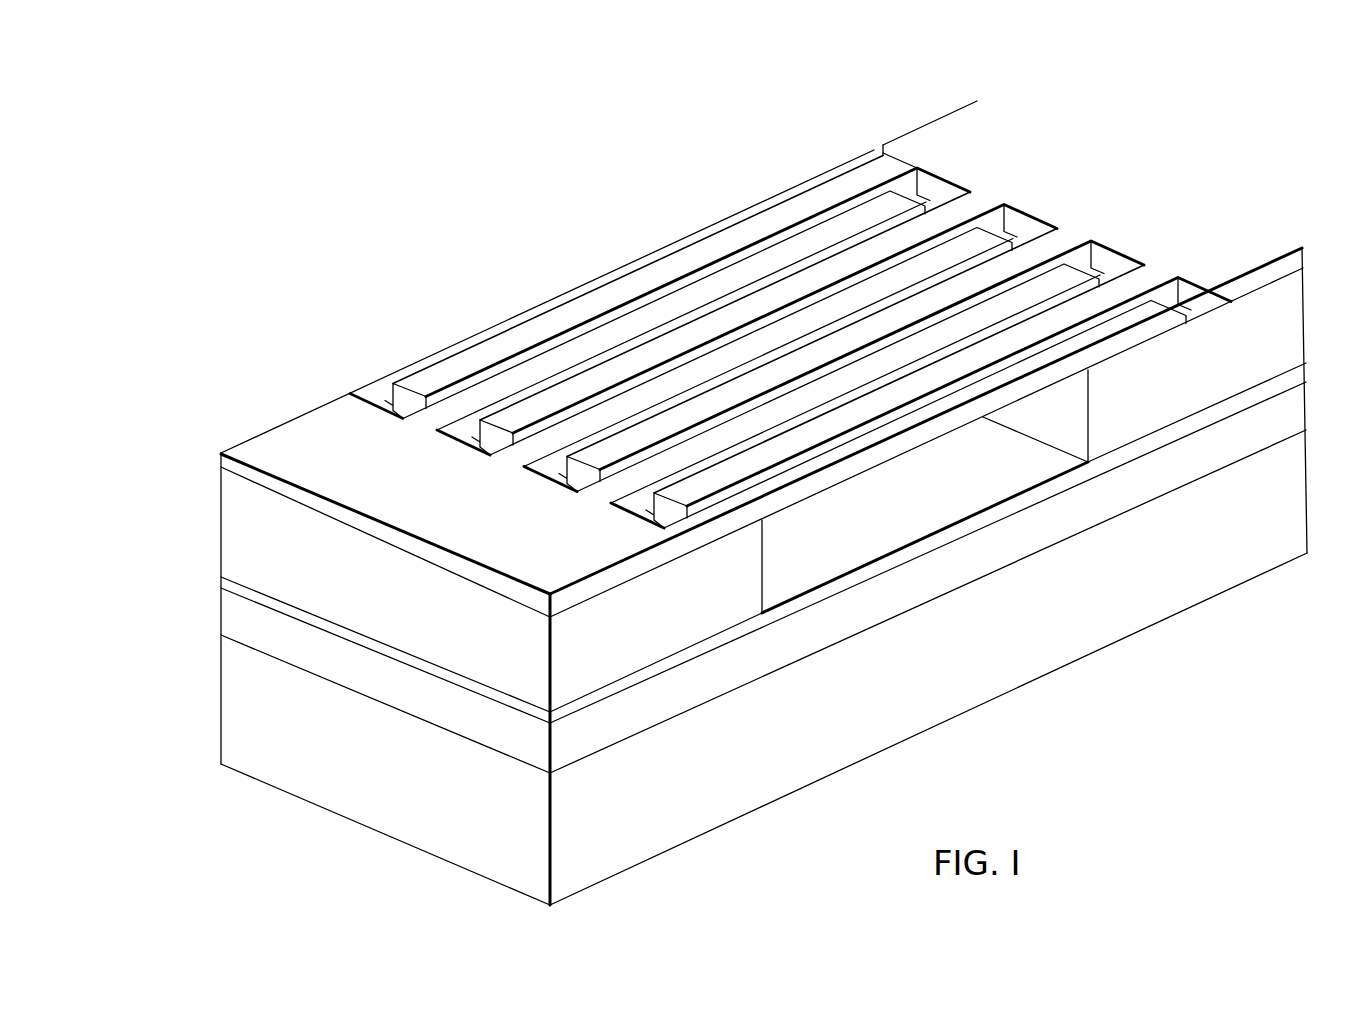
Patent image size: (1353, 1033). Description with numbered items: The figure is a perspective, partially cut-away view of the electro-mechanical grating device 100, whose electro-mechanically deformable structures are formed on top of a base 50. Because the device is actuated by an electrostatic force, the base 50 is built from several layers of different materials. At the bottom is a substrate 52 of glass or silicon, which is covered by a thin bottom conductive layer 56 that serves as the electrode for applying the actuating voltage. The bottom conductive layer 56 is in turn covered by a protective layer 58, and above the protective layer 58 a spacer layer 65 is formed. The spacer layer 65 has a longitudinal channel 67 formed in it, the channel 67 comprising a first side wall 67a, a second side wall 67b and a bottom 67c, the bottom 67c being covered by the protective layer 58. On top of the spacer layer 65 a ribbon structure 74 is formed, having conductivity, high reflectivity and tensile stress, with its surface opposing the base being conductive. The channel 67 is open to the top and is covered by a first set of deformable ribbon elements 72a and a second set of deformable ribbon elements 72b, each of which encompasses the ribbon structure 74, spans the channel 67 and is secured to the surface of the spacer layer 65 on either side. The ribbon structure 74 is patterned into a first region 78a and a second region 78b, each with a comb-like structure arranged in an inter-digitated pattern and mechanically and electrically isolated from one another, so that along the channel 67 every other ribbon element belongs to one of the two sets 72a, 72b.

The electro-mechanical grating device 100 is at (788, 129).
The base 50 is at (401, 790).
The substrate 52 is at (800, 765).
The bottom conductive layer 56 is at (833, 633).
The protective layer 58 is at (662, 670).
The spacer layer 65 is at (233, 520).
The longitudinal channel 67 is at (984, 461).
The first side wall 67a is at (765, 565).
The second side wall 67b is at (1072, 408).
The bottom 67c is at (913, 525).
The ribbon structure 74 is at (232, 470).
The first set of deformable ribbon elements 72a is at (757, 303).
The second set of deformable ribbon elements 72b is at (643, 395).
The first region 78a is at (1018, 147).
The second region 78b is at (328, 448).